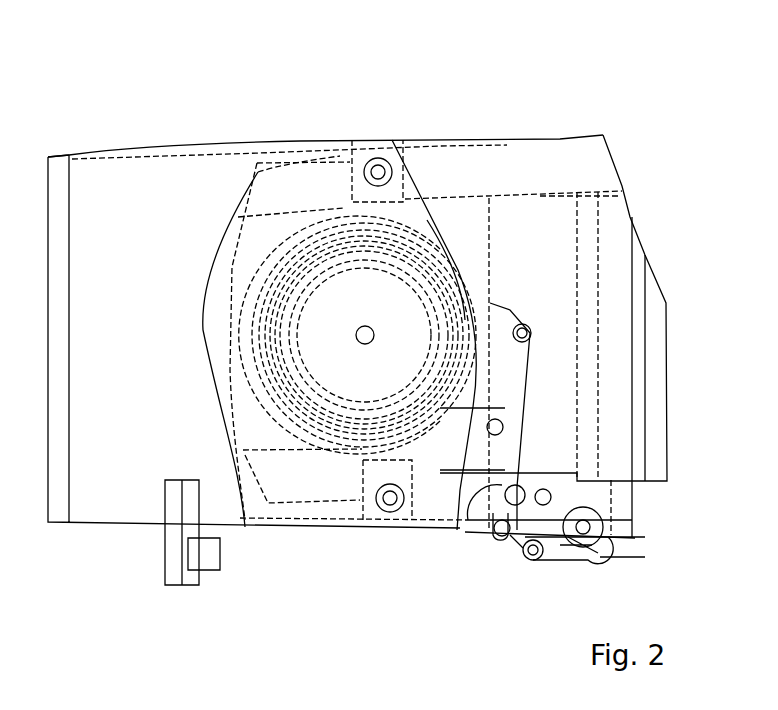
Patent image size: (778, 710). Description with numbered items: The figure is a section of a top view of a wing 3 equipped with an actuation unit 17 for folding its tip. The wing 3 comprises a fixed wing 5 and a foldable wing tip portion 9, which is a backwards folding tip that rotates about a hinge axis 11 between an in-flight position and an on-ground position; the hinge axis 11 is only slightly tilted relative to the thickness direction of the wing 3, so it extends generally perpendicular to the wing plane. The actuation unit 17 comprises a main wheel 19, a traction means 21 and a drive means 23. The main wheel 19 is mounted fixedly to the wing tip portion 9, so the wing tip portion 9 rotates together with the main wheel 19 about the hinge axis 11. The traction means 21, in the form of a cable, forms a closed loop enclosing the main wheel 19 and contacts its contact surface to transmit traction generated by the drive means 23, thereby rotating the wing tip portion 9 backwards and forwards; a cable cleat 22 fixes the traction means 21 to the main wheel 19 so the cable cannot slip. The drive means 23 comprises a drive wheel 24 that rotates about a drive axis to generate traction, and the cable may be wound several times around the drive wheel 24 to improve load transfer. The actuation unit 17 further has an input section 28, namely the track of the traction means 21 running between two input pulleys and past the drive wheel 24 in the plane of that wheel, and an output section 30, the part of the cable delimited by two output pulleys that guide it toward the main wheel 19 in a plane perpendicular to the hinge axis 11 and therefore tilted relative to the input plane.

The wing 3 is at (181, 124).
The fixed wing 5 is at (557, 138).
The foldable wing tip portion 9 is at (130, 148).
The hinge axis 11 is at (365, 335).
The actuation unit 17 is at (491, 552).
The main wheel 19 is at (352, 393).
The traction means 21 is at (471, 472).
The cable cleat 22 is at (303, 335).
The drive means 23 is at (582, 562).
The drive wheel 24 is at (608, 539).
The input section 28 is at (527, 580).
The output section 30 is at (462, 216).